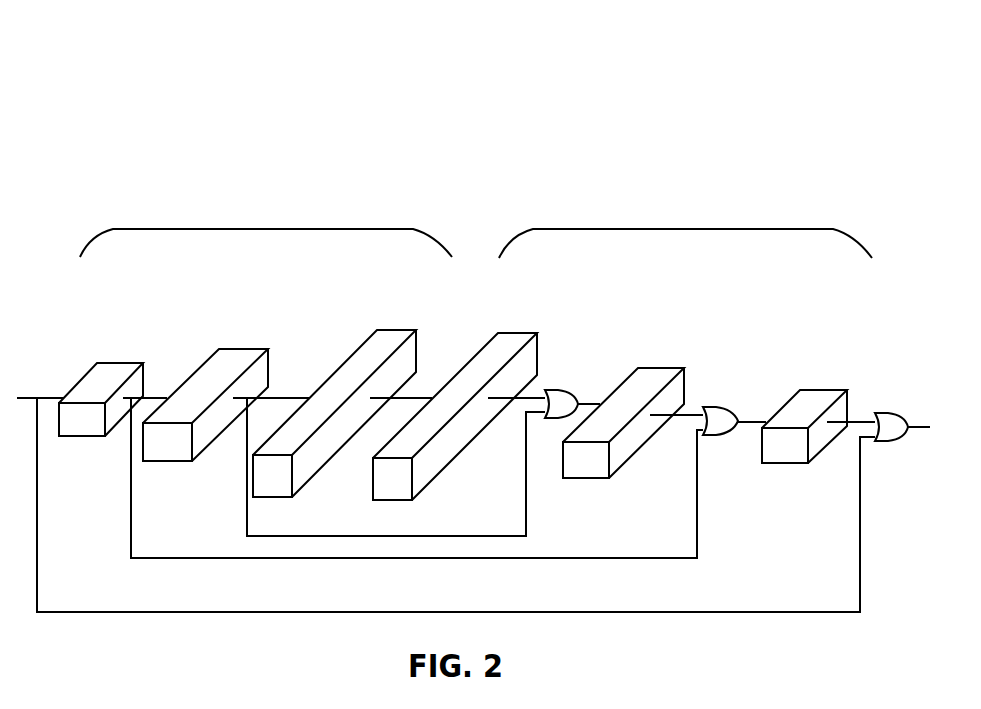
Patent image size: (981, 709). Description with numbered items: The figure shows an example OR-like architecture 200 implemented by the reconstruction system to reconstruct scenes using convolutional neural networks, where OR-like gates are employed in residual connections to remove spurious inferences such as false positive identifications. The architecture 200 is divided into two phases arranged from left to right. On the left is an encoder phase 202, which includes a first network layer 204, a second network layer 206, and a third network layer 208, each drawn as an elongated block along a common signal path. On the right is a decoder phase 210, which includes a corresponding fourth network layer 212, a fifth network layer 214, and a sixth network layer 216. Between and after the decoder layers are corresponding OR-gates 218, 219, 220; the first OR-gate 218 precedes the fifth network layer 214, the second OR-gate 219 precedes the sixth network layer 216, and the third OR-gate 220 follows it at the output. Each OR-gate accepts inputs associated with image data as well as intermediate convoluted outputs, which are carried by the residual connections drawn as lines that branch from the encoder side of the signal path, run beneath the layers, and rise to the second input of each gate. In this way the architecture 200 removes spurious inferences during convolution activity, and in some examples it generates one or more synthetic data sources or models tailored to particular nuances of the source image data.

The OR-like architecture 200 is at (818, 100).
The encoder phase 202 is at (267, 229).
The first network layer 204 is at (113, 363).
The second network layer 206 is at (233, 349).
The third network layer 208 is at (392, 330).
The decoder phase 210 is at (687, 229).
The fourth network layer 212 is at (502, 333).
The fifth network layer 214 is at (646, 367).
The sixth network layer 216 is at (807, 390).
The OR-gate 218 is at (547, 391).
The OR-gate 219 is at (707, 407).
The OR-gate 220 is at (880, 413).